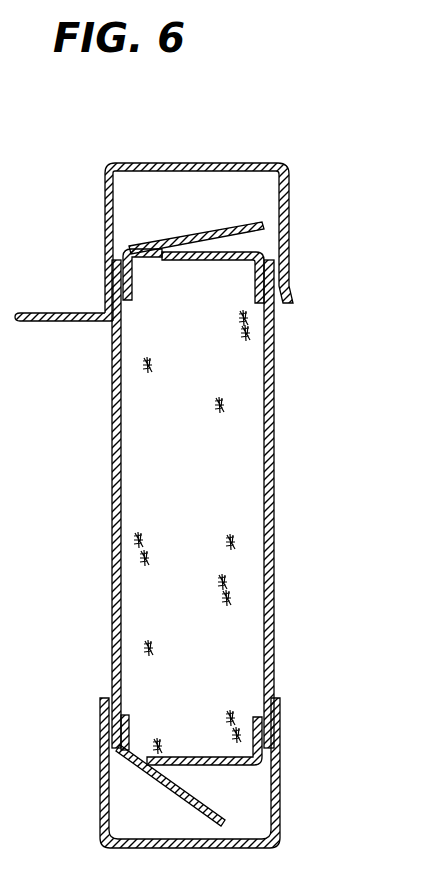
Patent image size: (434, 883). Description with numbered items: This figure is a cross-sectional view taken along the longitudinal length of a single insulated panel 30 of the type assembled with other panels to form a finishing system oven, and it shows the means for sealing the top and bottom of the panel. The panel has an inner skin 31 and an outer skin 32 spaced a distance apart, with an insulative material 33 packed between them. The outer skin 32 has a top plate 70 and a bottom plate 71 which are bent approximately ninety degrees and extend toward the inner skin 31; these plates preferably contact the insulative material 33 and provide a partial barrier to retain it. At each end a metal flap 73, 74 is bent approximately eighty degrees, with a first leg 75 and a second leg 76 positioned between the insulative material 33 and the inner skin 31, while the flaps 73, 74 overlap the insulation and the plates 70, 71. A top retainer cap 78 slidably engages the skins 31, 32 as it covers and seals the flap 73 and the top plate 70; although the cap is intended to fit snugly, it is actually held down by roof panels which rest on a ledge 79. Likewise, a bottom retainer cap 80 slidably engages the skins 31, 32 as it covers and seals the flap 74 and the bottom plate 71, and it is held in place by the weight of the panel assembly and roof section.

The insulated panel 30 is at (297, 603).
The inner skin 31 is at (111, 547).
The outer skin 32 is at (274, 434).
The insulative material 33 is at (200, 496).
The top plate 70 is at (209, 262).
The bottom plate 71 is at (214, 768).
The metal flap 73 is at (165, 243).
The metal flap 74 is at (160, 783).
The first leg 75 is at (131, 289).
The second leg 76 is at (124, 740).
The top retainer cap 78 is at (178, 163).
The ledge 79 is at (45, 322).
The bottom retainer cap 80 is at (243, 848).